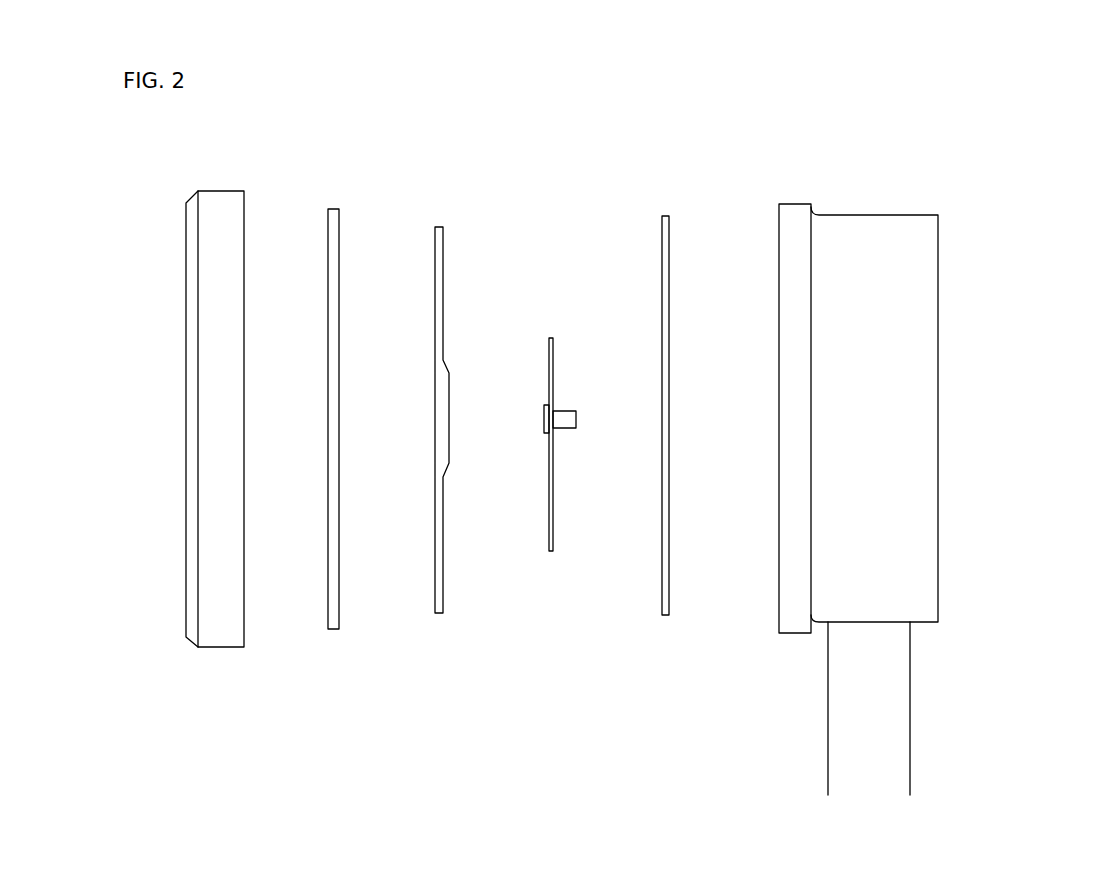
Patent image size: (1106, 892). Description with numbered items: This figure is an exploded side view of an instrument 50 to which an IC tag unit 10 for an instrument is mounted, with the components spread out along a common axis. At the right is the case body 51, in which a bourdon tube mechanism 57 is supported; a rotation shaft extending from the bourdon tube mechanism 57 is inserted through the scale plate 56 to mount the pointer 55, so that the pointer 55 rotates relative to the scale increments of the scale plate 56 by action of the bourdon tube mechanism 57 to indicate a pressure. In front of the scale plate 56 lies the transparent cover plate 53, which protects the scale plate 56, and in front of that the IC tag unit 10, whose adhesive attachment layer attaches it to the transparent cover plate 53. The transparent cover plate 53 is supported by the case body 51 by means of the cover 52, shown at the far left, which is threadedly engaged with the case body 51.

The instrument 50 is at (967, 417).
The case body 51 is at (876, 215).
The cover 52 is at (218, 191).
The transparent cover plate 53 is at (331, 209).
The IC tag unit 10 is at (440, 227).
The pointer 55 is at (551, 338).
The scale plate 56 is at (666, 216).
The bourdon tube mechanism 57 is at (903, 338).